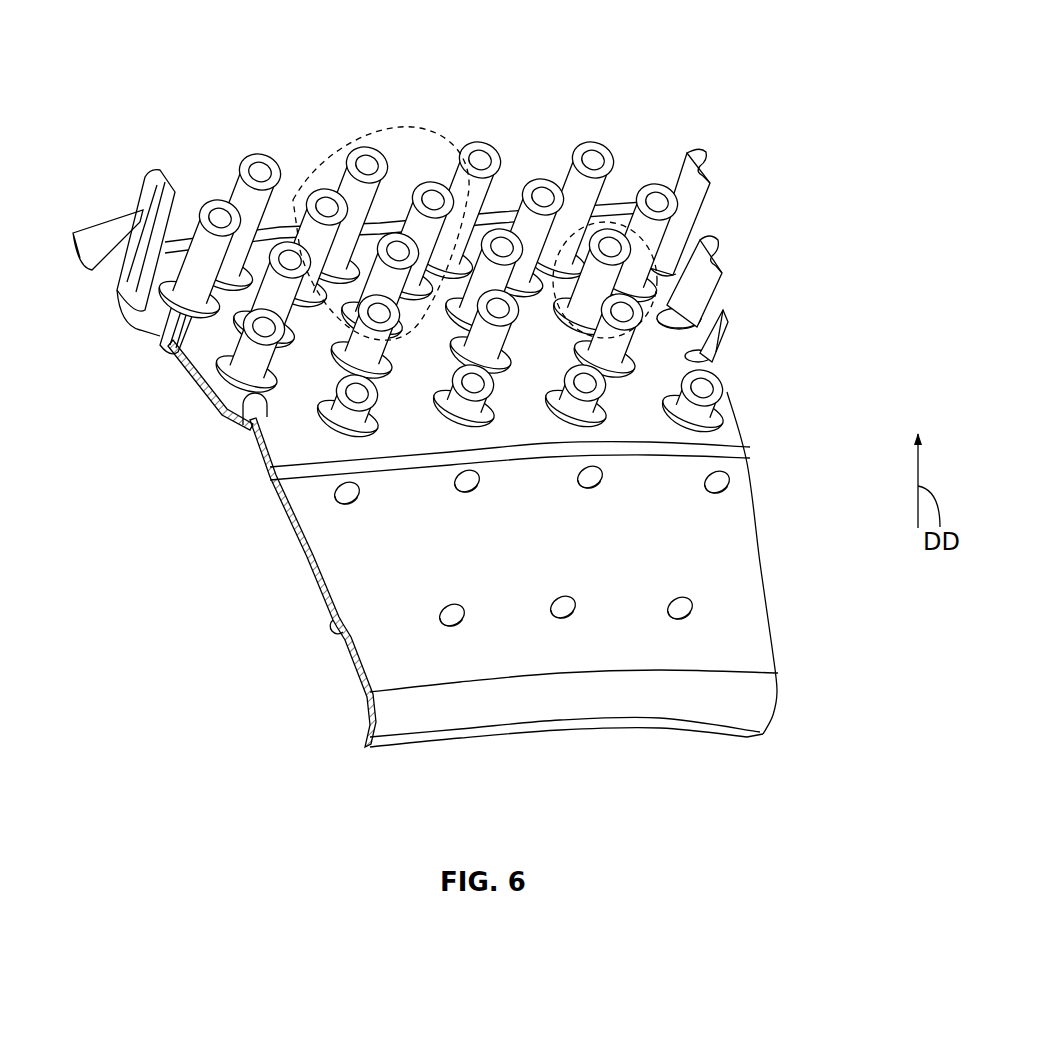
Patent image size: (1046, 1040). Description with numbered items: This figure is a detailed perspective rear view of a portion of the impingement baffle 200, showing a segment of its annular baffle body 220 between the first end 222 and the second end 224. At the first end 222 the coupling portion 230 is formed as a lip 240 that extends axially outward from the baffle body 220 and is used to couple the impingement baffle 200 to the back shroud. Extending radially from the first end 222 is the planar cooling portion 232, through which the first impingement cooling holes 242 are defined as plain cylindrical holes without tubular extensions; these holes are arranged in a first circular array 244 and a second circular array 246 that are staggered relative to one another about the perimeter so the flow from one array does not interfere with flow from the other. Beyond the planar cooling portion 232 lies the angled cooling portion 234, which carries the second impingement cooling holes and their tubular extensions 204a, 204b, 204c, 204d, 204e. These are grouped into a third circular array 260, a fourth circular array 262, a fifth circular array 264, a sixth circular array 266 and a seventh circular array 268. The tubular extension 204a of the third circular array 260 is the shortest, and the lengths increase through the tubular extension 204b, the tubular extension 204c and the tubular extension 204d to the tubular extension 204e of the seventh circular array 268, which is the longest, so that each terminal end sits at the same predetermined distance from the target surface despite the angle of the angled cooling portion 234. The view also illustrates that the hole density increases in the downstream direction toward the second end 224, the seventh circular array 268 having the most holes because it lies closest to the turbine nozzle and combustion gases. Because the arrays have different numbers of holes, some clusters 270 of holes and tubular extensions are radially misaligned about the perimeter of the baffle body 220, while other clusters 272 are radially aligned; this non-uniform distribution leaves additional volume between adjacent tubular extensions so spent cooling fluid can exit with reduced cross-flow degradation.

The impingement baffle 200 is at (818, 48).
The baffle body 220 is at (805, 108).
The first end 222 is at (363, 740).
The second end 224 is at (73, 230).
The coupling portion 230 is at (786, 700).
The planar cooling portion 232 is at (776, 544).
The angled cooling portion 234 is at (773, 378).
The lip 240 is at (747, 740).
The first impingement cooling holes 242 is at (722, 473).
The first circular array 244 is at (776, 641).
The second circular array 246 is at (774, 477).
The third circular array 260 is at (737, 395).
The fourth circular array 262 is at (733, 338).
The fifth circular array 264 is at (729, 284).
The sixth circular array 266 is at (682, 224).
The seventh circular array 268 is at (722, 186).
The clusters 270 is at (405, 148).
The clusters 272 is at (513, 165).
The tubular extension 204a is at (545, 412).
The tubular extension 204b is at (560, 358).
The tubular extension 204c is at (614, 226).
The tubular extension 204d is at (544, 168).
The tubular extension 204e is at (477, 138).